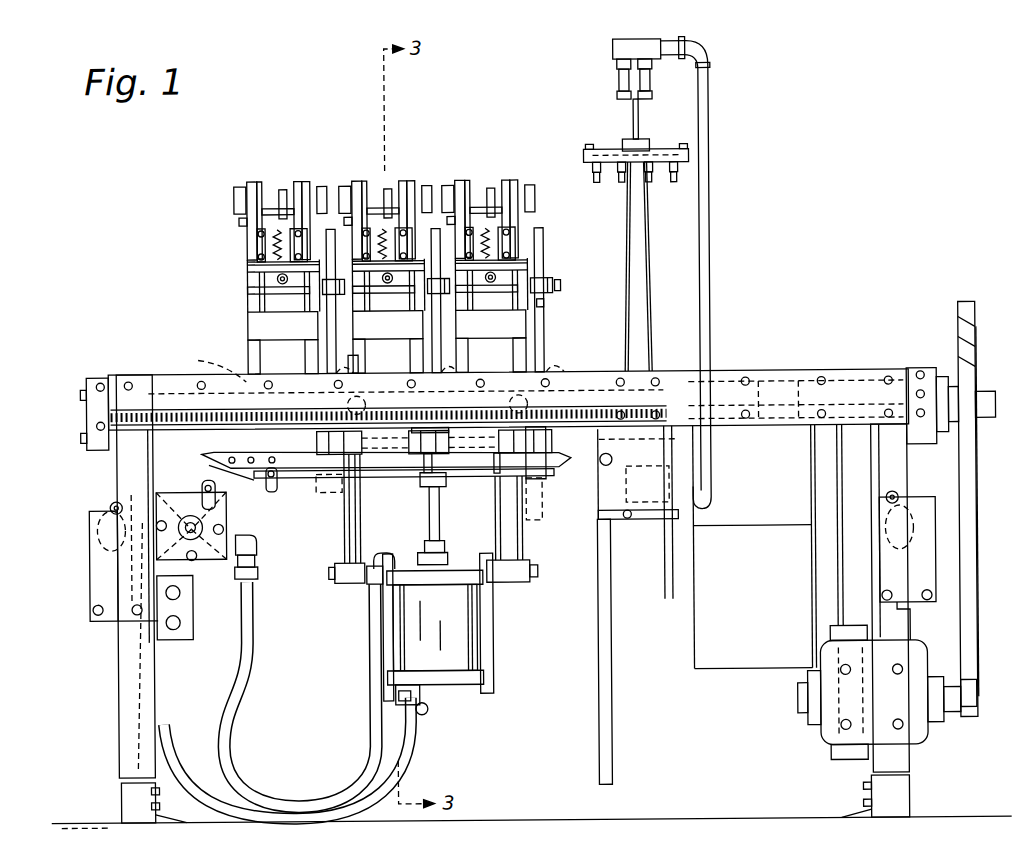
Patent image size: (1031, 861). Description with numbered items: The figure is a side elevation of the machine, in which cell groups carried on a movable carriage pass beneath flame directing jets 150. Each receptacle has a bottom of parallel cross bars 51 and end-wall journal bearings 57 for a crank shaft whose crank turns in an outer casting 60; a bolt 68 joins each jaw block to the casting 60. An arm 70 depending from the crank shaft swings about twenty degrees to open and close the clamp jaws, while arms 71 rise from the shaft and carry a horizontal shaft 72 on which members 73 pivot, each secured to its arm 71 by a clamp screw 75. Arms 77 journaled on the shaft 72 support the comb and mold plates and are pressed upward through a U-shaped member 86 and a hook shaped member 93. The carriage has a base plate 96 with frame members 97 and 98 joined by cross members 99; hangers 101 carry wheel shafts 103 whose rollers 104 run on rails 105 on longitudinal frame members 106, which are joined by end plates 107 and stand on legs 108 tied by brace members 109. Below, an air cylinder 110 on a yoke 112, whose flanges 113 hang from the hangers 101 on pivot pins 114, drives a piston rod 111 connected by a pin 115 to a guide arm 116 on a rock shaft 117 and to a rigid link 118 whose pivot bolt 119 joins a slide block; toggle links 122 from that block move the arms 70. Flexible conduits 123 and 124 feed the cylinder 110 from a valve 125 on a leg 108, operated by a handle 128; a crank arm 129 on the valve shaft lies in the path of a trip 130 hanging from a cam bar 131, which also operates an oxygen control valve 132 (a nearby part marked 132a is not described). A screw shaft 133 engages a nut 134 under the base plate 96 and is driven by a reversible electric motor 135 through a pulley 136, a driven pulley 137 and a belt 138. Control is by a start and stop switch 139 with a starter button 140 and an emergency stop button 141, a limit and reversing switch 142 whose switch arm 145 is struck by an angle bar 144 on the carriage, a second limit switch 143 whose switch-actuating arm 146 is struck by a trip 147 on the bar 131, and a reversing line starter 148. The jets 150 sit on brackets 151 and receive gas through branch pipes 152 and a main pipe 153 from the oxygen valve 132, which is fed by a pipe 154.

The cross bars 51 is at (391, 252).
The journal bearings 57 is at (258, 243).
The outer casting 60 is at (260, 289).
The bolt 68 is at (278, 277).
The arm 70 is at (328, 280).
The arms 71 is at (252, 182).
The shaft 72 is at (290, 207).
The members 73 is at (260, 181).
The clamp screws 75 is at (240, 220).
The arms 77 is at (235, 195).
The U-shaped member 86 is at (283, 188).
The hook shaped member 93 is at (278, 228).
The horizontal base plate 96 is at (370, 368).
The frame members 97 is at (252, 355).
The frame members 98 is at (310, 355).
The cross members 99 is at (260, 323).
The hangers 101 is at (524, 537).
The wheel shafts 103 is at (348, 402).
The rollers 104 is at (362, 402).
The rails 105 is at (757, 410).
The longitudinally extending frame members 106 is at (729, 396).
The end plates 107 is at (88, 403).
The legs 108 is at (118, 720).
The brace members 109 is at (120, 798).
The air cylinder 110 is at (455, 630).
The piston rod 111 is at (441, 525).
The yoke 112 is at (478, 660).
The parallel flanges 113 is at (493, 605).
The pivot pins 114 is at (538, 570).
The pin 115 is at (316, 438).
The guide arm 116 is at (552, 472).
The rock shaft 117 is at (446, 486).
The rigid link 118 is at (327, 323).
The pivot bolt 119 is at (546, 303).
The toggle links 122 is at (562, 282).
The flexible conduit 123 is at (418, 740).
The flexible conduit 124 is at (369, 657).
The valve 125 is at (220, 520).
The handle 128 is at (258, 540).
The crank arm 129 is at (200, 490).
The trip finger 130 is at (275, 486).
The cam bar 131 is at (411, 438).
The oxygen control valve 132 is at (615, 530).
The cam 132a is at (612, 458).
The screw shaft 133 is at (86, 427).
The nut 134 is at (228, 405).
The electric motor 135 is at (825, 740).
The pulley 136 is at (977, 690).
The driven pulley 137 is at (978, 460).
The belt 138 is at (979, 548).
The start and stop switch 139 is at (193, 637).
The starter button 140 is at (180, 620).
The emergency stop button 141 is at (180, 590).
The limit and reversing switch 142 is at (905, 615).
The second limit switch 143 is at (98, 566).
The angle bar 144 is at (544, 510).
The switch arm 145 is at (900, 500).
The switch-actuating arm 146 is at (112, 504).
The trip 147 is at (217, 493).
The reversing line starter 148 is at (758, 643).
The flame directing jets 150 is at (603, 183).
The brackets 151 is at (655, 247).
The branch pipes 152 is at (636, 117).
The main pipe 153 is at (712, 125).
The pipe 154 is at (597, 705).